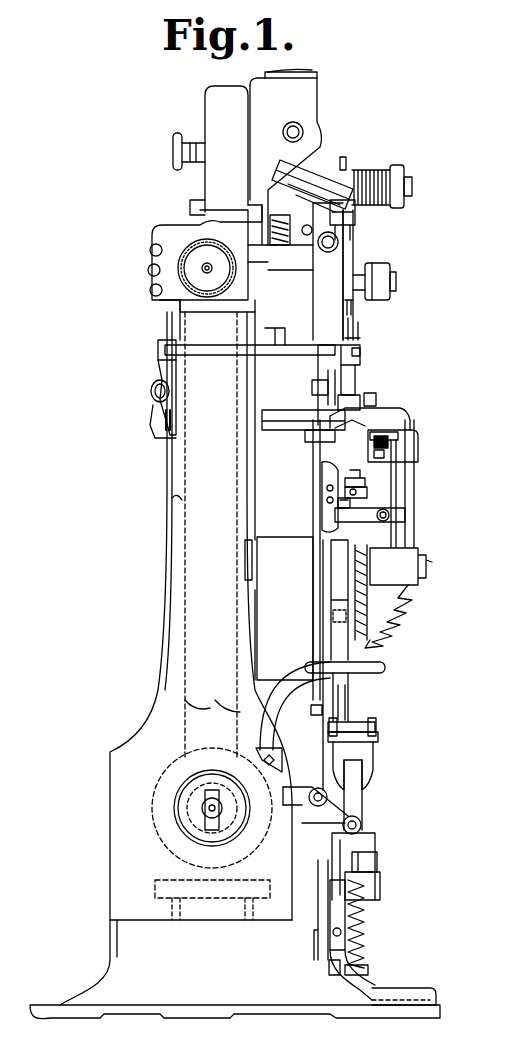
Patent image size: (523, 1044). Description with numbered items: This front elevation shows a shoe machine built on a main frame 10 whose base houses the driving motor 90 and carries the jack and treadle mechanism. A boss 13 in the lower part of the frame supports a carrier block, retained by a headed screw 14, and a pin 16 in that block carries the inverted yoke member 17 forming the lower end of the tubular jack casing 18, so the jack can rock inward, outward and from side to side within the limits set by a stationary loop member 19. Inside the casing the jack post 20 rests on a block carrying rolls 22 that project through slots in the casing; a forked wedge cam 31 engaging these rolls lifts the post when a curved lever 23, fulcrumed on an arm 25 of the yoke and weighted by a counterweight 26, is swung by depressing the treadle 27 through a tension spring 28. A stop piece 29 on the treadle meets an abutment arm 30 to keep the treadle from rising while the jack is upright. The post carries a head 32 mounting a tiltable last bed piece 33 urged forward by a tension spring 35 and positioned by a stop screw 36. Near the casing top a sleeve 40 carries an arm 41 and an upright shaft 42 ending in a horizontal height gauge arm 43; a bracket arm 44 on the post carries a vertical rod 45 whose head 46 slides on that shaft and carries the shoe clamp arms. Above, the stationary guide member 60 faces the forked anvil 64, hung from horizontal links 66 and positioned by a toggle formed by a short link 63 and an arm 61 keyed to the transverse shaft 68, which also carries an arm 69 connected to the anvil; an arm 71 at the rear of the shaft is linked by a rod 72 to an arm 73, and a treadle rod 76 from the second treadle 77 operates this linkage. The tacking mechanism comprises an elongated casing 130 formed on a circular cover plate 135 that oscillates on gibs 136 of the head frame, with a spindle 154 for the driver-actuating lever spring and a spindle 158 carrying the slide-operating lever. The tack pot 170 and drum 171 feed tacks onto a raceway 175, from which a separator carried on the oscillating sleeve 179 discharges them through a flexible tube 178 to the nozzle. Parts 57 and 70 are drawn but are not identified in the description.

The main frame 10 is at (180, 627).
The boss 13 is at (322, 814).
The headed retaining screw 14 is at (362, 816).
The pin 16 is at (360, 835).
The inverted yoke member 17 is at (357, 788).
The tubular jack casing 18 is at (362, 649).
The stationary loop member 19 is at (386, 672).
The jack post 20 is at (343, 507).
The rolls 22 is at (368, 716).
The curved lever 23 is at (375, 757).
The arm 25 is at (370, 860).
The counterweight 26 is at (372, 890).
The treadle 27 is at (400, 440).
The tension spring 28 is at (367, 935).
The stop piece 29 is at (335, 910).
The abutment arm 30 is at (324, 888).
The forked wedge cam 31 is at (380, 736).
The head 32 is at (368, 490).
The last bed piece 33 is at (322, 482).
The tension spring 35 is at (338, 503).
The stop screw 36 is at (367, 480).
The sleeve 40 is at (370, 590).
The arm 41 is at (380, 563).
The upright shaft 42 is at (416, 500).
The height gauge arm 43 is at (362, 424).
The bracket arm 44 is at (407, 516).
The vertical rod 45 is at (398, 537).
The head 46 is at (420, 452).
The coil spring 57 is at (363, 585).
The stationary guide member 60 is at (402, 414).
The arm 61 is at (360, 366).
The short link 63 is at (346, 381).
The anvil 64 is at (335, 412).
The links 66 is at (378, 395).
The transverse shaft 68 is at (261, 345).
The arm 69 is at (347, 353).
The rod 70 is at (345, 330).
The arm 71 is at (158, 371).
The rod 72 is at (151, 393).
The arm 73 is at (160, 417).
The treadle rod 76 is at (320, 592).
The second treadle 77 is at (330, 983).
The driving motor 90 is at (178, 868).
The casing 130 is at (360, 323).
The circular cover plate 135 is at (333, 263).
The circular gibs 136 is at (312, 270).
The spindle 154 is at (410, 183).
The spindle 158 is at (397, 280).
The tack pot 170 is at (304, 88).
The drum 171 is at (205, 96).
The raceway 175 is at (305, 172).
The flexible tube 178 is at (355, 313).
The sleeve 179 is at (292, 209).